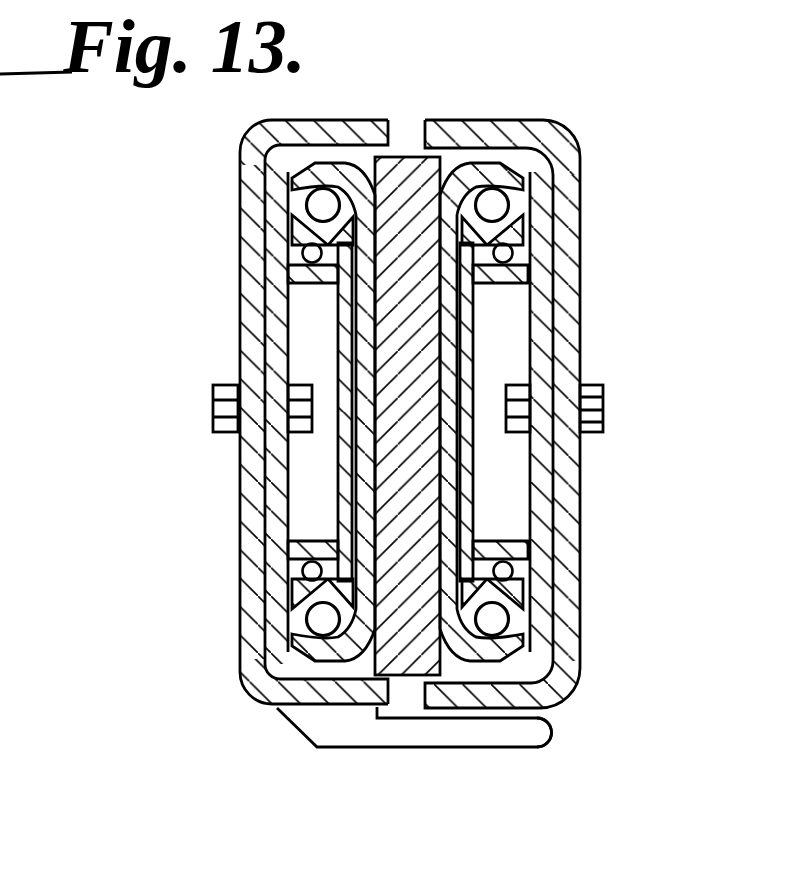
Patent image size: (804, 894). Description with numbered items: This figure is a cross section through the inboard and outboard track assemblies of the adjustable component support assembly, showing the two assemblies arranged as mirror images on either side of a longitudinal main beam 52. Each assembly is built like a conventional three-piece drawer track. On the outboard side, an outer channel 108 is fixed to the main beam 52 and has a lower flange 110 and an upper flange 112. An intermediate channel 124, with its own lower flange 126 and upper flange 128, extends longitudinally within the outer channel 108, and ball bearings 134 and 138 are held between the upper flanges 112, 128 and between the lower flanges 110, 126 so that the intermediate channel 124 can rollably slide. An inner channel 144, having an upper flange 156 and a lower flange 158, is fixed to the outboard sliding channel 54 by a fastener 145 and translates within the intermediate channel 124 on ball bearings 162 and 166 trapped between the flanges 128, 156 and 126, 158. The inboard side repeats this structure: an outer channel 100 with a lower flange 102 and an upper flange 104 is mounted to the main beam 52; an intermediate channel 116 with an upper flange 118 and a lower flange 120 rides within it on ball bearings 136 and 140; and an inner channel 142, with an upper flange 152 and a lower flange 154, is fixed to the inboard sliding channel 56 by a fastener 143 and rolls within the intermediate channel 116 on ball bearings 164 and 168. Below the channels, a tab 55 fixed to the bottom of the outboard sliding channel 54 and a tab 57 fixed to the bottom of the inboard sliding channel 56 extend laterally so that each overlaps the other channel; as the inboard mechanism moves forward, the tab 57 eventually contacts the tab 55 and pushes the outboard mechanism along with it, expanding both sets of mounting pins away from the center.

The longitudinal main beam 52 is at (405, 157).
The outboard sliding channel 54 is at (265, 126).
The tab 55 is at (461, 748).
The inboard sliding channel 56 is at (578, 140).
The tab 57 is at (553, 716).
The outer channel 100 is at (535, 631).
The lower flange 102 is at (579, 676).
The upper flange 104 is at (525, 181).
The outer channel 108 is at (300, 722).
The lower flange 110 is at (306, 685).
The upper flange 112 is at (297, 178).
The intermediate channel 116 is at (526, 223).
The upper flange 118 is at (540, 266).
The lower flange 120 is at (526, 585).
The intermediate channel 124 is at (300, 617).
The lower flange 126 is at (287, 602).
The upper flange 128 is at (293, 229).
The ball bearing 134 is at (306, 204).
The ball bearing 136 is at (509, 206).
The ball bearing 138 is at (293, 660).
The ball bearing 140 is at (509, 612).
The inner channel 142 is at (578, 260).
The fastener 143 is at (604, 410).
The inner channel 144 is at (290, 566).
The fastener 145 is at (214, 430).
The upper flange 152 is at (500, 284).
The lower flange 154 is at (502, 541).
The upper flange 156 is at (320, 284).
The lower flange 158 is at (318, 541).
The ball bearing 162 is at (303, 256).
The ball bearing 164 is at (540, 253).
The ball bearing 166 is at (302, 576).
The ball bearing 168 is at (513, 573).